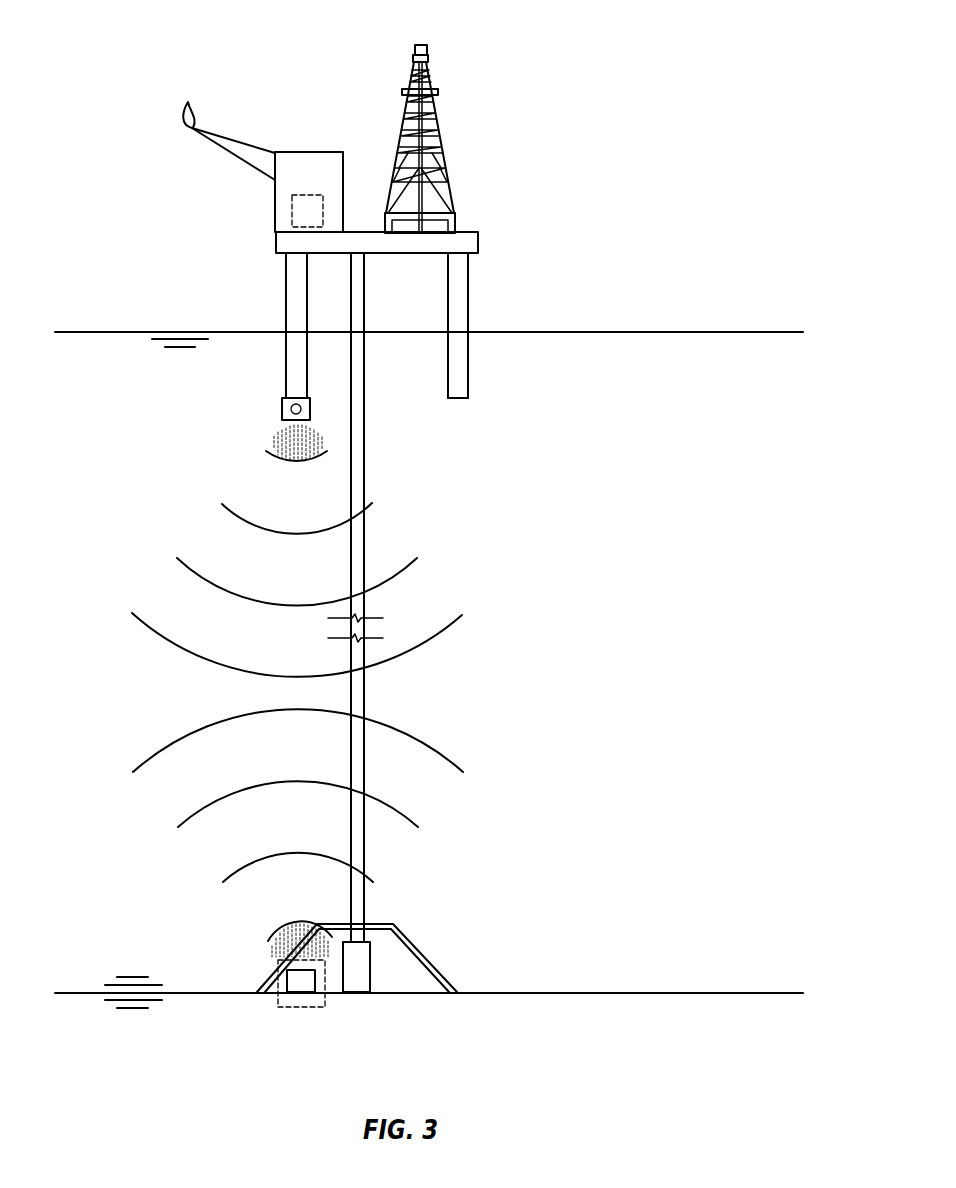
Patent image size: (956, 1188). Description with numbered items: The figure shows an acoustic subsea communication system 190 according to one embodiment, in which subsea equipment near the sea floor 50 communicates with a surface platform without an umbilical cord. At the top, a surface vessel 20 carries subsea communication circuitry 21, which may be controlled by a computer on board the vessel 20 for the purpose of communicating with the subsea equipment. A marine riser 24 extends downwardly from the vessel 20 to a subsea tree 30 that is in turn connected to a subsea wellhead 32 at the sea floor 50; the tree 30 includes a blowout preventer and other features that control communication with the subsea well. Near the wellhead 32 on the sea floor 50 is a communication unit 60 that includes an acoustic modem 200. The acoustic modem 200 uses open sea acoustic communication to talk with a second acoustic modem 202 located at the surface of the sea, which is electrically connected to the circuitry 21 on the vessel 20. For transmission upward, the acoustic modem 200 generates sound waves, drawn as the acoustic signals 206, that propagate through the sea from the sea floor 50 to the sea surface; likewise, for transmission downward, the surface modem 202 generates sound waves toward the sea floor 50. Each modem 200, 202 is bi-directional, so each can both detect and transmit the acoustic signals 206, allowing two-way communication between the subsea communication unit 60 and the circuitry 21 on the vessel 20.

The acoustic subsea communication system 190 is at (714, 201).
The surface vessel 20 is at (478, 240).
The subsea communication circuitry 21 is at (292, 211).
The acoustic modem 202 is at (282, 415).
The acoustic signals 206 is at (149, 705).
The marine riser 24 is at (365, 702).
The subsea tree 30 is at (413, 943).
The subsea wellhead 32 is at (370, 967).
The acoustic modem 200 is at (268, 975).
The communication unit 60 is at (302, 1007).
The sea floor 50 is at (643, 993).